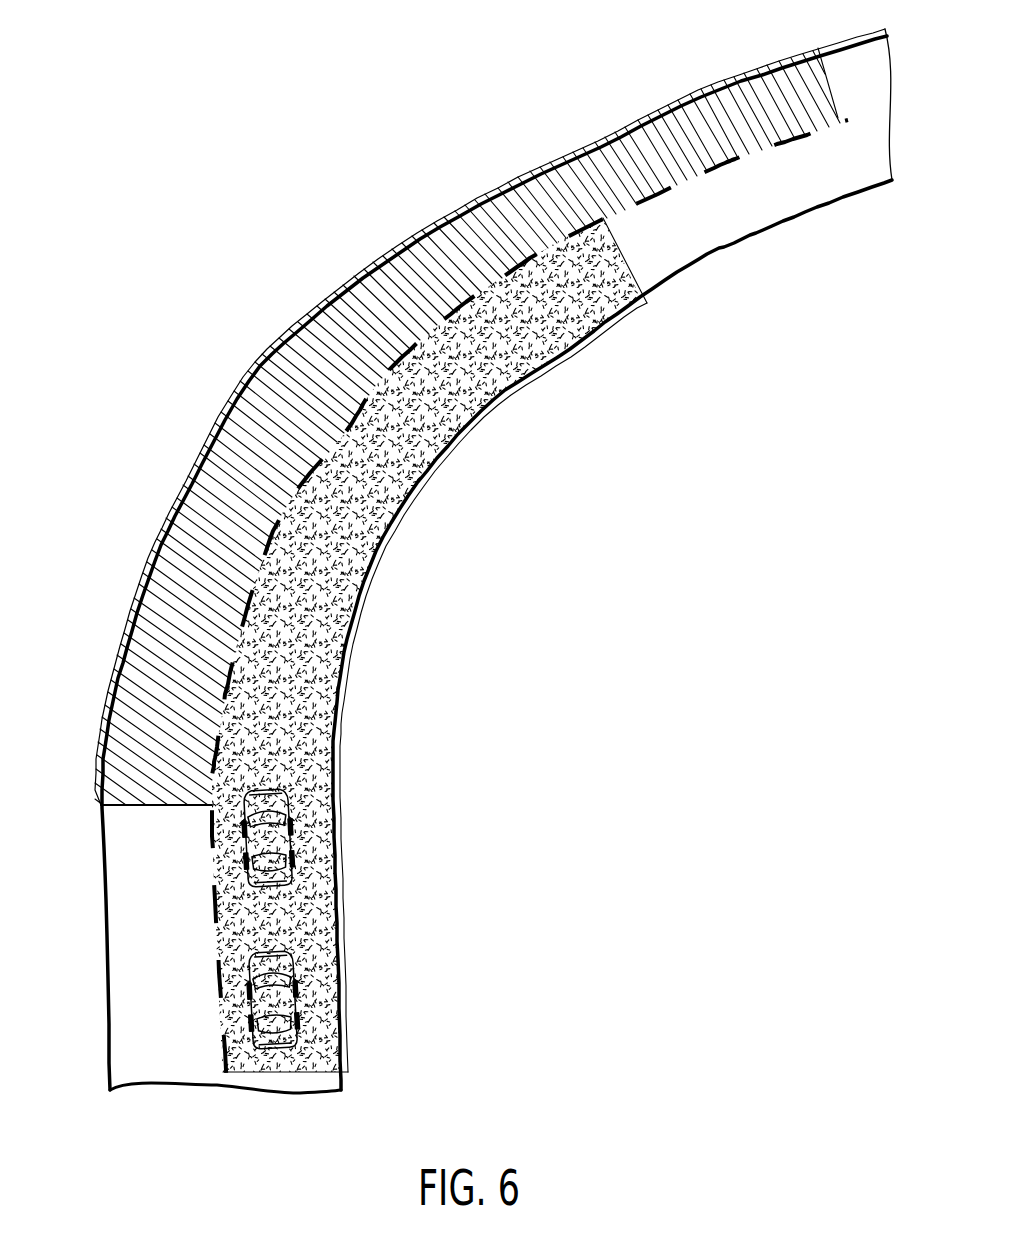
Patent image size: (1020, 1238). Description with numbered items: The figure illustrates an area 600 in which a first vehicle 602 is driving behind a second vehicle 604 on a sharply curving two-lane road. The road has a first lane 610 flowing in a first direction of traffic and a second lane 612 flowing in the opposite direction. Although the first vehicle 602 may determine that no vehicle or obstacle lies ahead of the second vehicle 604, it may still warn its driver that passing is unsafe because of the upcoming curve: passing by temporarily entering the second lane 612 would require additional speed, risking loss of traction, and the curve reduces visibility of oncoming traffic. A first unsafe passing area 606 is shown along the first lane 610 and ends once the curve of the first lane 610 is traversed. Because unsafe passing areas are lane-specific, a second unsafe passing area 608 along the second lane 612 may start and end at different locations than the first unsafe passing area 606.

The area 600 is at (190, 145).
The first vehicle 602 is at (295, 1000).
The second vehicle 604 is at (290, 842).
The first unsafe passing area 606 is at (567, 347).
The second unsafe passing area 608 is at (535, 162).
The first lane 610 is at (758, 213).
The second lane 612 is at (118, 987).